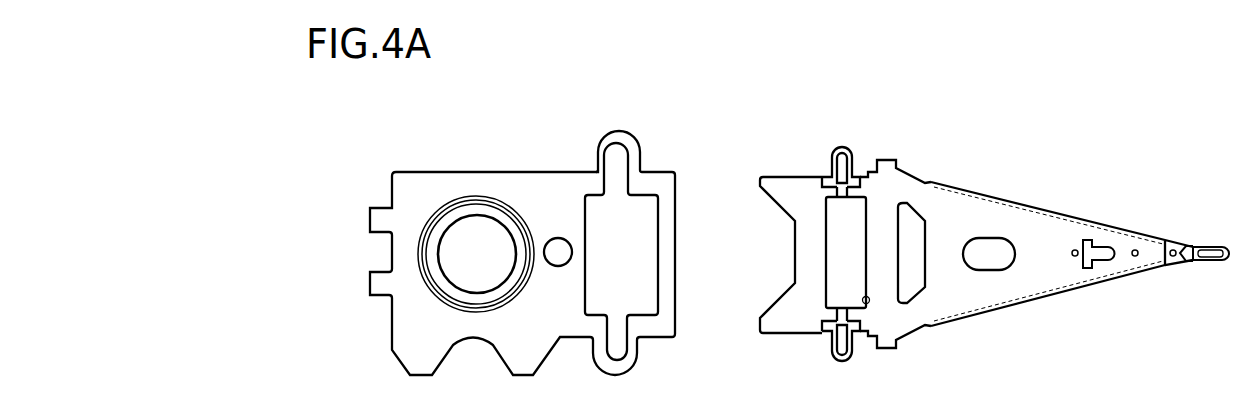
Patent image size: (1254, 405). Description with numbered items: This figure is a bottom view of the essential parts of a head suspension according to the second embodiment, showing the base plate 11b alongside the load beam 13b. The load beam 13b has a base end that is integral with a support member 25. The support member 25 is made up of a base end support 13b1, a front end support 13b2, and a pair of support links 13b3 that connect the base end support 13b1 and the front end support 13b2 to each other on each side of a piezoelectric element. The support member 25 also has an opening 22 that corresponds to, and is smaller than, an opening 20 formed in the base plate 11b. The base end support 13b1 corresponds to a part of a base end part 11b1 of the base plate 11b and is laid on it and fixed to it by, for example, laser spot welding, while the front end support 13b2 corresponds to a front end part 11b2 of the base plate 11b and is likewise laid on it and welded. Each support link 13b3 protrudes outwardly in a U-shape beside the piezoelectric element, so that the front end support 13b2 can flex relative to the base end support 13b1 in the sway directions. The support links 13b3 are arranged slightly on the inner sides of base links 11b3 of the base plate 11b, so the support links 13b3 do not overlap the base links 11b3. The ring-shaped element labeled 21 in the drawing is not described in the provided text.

The base plate 11b is at (506, 133).
The base end part 11b1 is at (580, 212).
The front end part 11b2 is at (665, 216).
The base links 11b3 is at (615, 134).
The opening 20 is at (592, 230).
The ring member 21 is at (441, 234).
The load beam 13b is at (989, 128).
The base end support 13b1 is at (818, 218).
The front end support 13b2 is at (875, 217).
The support links 13b3 is at (841, 146).
The opening 22 is at (869, 302).
The support member 25 is at (822, 128).